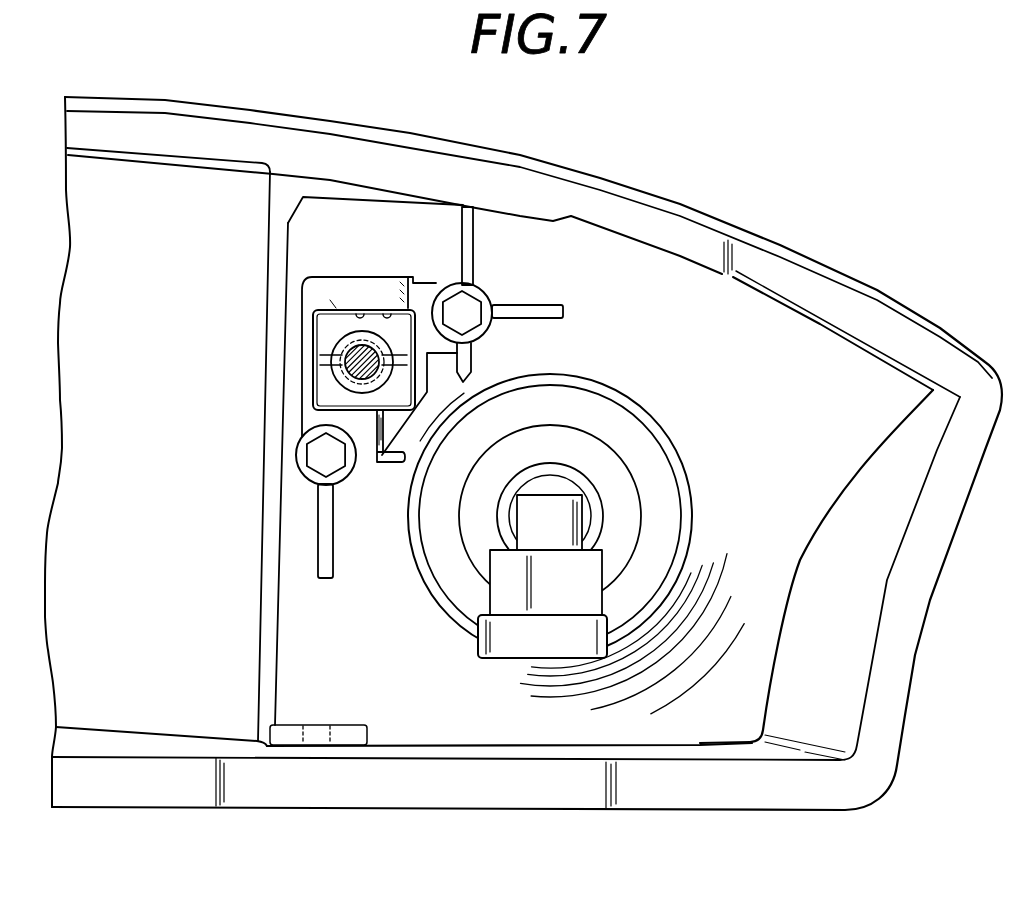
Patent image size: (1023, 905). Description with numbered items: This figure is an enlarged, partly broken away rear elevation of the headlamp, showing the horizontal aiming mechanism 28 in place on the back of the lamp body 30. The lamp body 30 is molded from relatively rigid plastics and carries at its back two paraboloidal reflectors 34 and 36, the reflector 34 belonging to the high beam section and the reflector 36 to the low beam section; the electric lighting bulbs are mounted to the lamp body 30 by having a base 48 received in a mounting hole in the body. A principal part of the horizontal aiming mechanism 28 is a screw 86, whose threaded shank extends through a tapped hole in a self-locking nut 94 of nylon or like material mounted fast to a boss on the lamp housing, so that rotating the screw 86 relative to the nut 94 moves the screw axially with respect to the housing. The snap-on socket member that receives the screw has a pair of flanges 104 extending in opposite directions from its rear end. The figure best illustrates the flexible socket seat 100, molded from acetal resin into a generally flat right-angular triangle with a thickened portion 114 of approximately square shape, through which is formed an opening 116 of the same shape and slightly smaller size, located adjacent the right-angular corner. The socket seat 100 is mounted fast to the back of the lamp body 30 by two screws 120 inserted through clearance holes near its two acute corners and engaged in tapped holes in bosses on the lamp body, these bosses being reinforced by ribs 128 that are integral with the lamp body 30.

The horizontal aiming mechanism 28 is at (515, 275).
The lamp body 30 is at (832, 681).
The reflector 34 is at (717, 727).
The reflector 36 is at (180, 718).
The base 48 is at (587, 478).
The screw 86 is at (347, 375).
The self-locking nut 94 is at (330, 300).
The flexible socket seat 100 is at (327, 272).
The flanges 104 is at (315, 318).
The thickened portion 114 is at (363, 310).
The opening 116 is at (390, 308).
The screws 120 is at (487, 317).
The ribs 128 is at (468, 262).